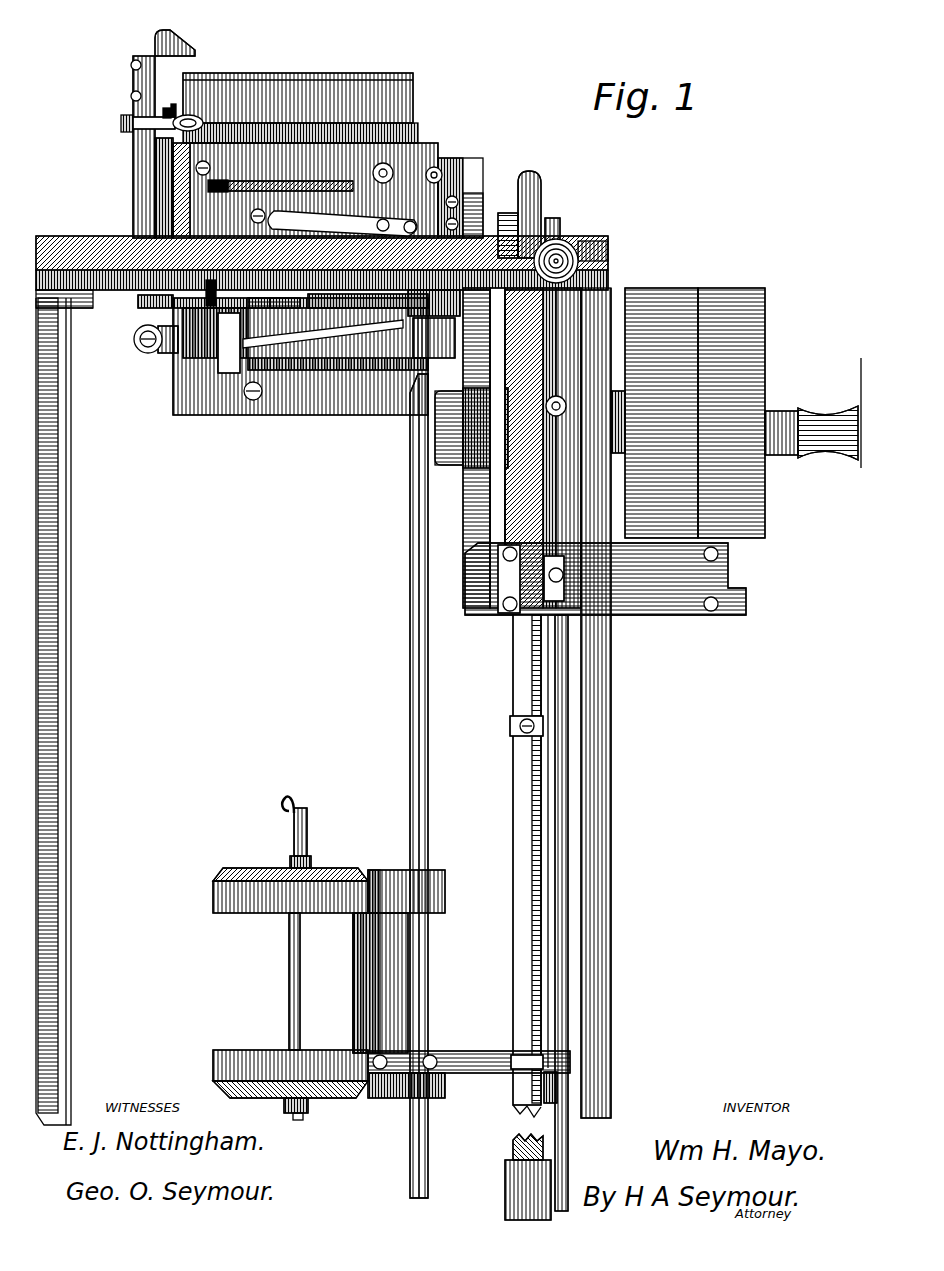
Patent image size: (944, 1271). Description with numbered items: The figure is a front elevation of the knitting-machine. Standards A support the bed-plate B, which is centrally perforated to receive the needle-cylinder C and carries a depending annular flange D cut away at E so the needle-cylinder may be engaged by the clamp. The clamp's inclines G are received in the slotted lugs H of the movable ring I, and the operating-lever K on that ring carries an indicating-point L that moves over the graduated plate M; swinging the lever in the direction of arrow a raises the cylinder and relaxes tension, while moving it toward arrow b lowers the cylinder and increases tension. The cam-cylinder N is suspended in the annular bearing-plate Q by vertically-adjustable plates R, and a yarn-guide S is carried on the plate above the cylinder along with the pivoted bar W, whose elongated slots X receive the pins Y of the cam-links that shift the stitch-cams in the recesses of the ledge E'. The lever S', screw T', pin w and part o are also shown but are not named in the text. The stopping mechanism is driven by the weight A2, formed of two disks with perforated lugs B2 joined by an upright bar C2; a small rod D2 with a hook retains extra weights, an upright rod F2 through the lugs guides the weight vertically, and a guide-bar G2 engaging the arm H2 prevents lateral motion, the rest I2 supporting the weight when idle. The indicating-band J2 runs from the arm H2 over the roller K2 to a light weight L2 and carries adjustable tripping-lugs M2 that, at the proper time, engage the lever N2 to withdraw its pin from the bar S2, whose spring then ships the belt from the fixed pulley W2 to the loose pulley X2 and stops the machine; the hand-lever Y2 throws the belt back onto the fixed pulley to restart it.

The standards A is at (336, 706).
The bed-plate B is at (77, 250).
The needle-cylinder C is at (306, 108).
The cam-cylinder N is at (328, 190).
The lever S' is at (334, 222).
The screw T' is at (450, 173).
The vertically-adjustable plates R is at (459, 207).
The annular bearing-plate Q is at (465, 229).
The yarn-guide S is at (162, 134).
The bar W is at (113, 116).
The elongated horizontal slots X is at (186, 110).
The pin w is at (161, 110).
The pins Y is at (173, 101).
The indicating-point L is at (211, 286).
The arrow a is at (250, 290).
The graduated plate M is at (283, 290).
The arrow b is at (325, 292).
The movable ring I is at (130, 295).
The operating-lever K is at (165, 308).
The depending annular flange D is at (331, 379).
The slotted lugs H is at (229, 343).
The inclines G is at (323, 338).
The ledge E' is at (147, 354).
The cut-away portions E is at (338, 403).
The guide strip o is at (497, 448).
The hand-lever Y2 is at (522, 448).
The lever N2 is at (533, 183).
The roller K2 is at (552, 216).
The loose pulley X2 is at (661, 401).
The fixed pulley W2 is at (731, 400).
The bar S2 is at (605, 579).
The indicating-band J2 is at (513, 866).
The guide-bar G2 is at (560, 1004).
The adjustable tripping-lugs M2 is at (513, 728).
The rest I2 is at (535, 1080).
The light weight L2 is at (512, 1177).
The upright rod F2 is at (428, 786).
The weight A2 is at (290, 947).
The perforated lugs B2 is at (416, 991).
The upright bar C2 is at (366, 983).
The small rod D2 is at (286, 1016).
The arm H2 is at (469, 1050).